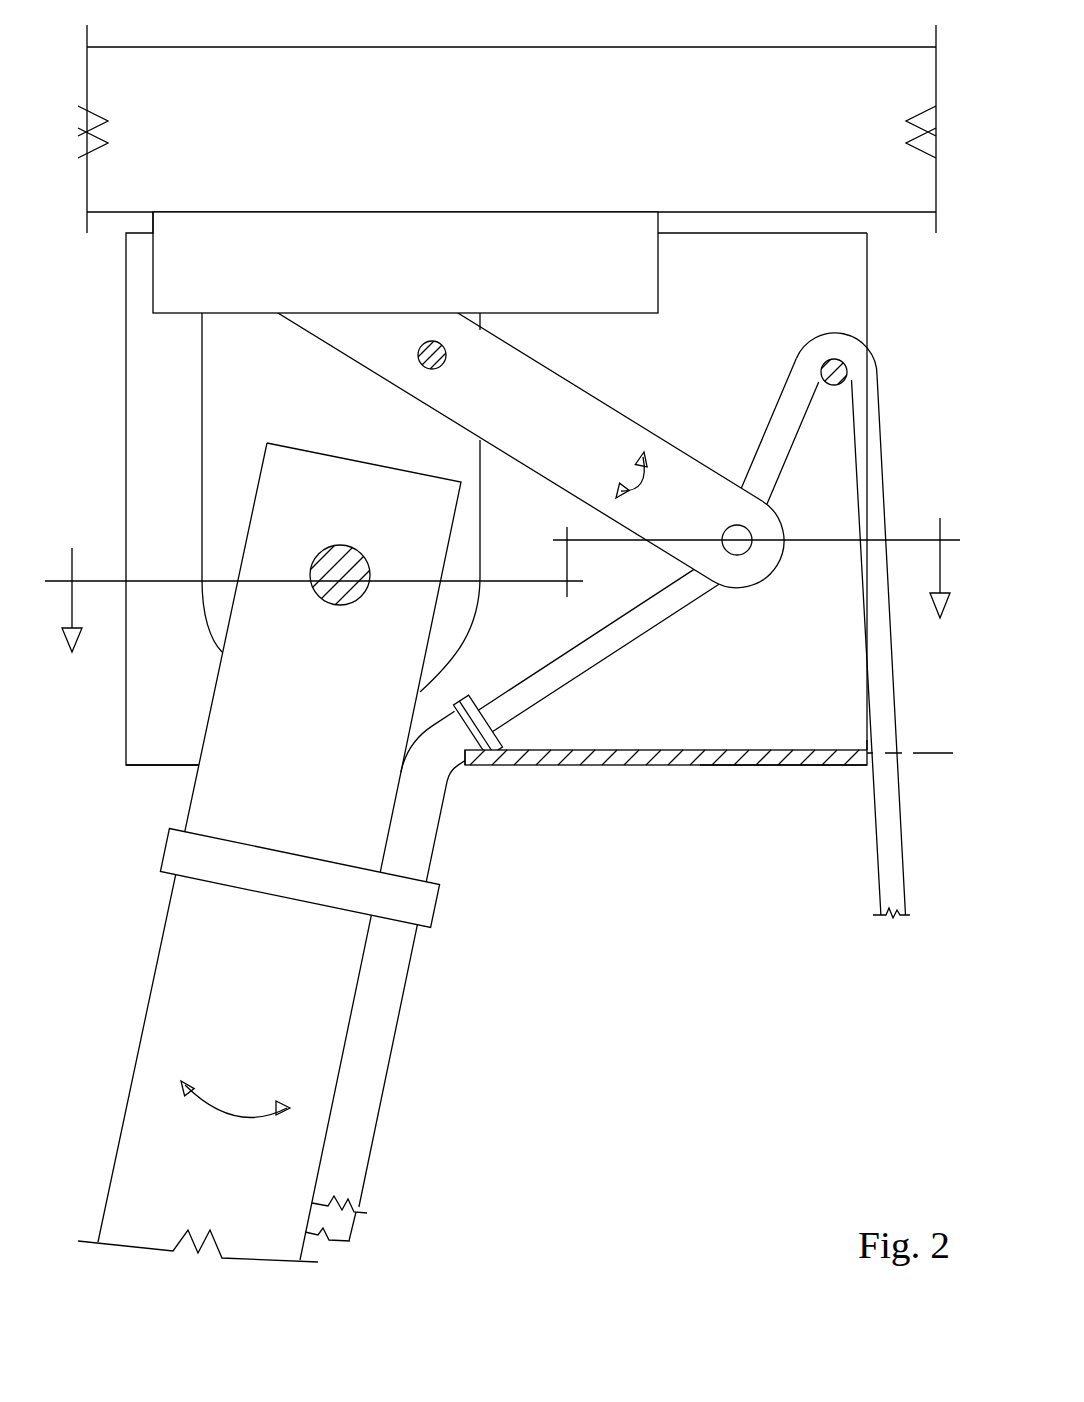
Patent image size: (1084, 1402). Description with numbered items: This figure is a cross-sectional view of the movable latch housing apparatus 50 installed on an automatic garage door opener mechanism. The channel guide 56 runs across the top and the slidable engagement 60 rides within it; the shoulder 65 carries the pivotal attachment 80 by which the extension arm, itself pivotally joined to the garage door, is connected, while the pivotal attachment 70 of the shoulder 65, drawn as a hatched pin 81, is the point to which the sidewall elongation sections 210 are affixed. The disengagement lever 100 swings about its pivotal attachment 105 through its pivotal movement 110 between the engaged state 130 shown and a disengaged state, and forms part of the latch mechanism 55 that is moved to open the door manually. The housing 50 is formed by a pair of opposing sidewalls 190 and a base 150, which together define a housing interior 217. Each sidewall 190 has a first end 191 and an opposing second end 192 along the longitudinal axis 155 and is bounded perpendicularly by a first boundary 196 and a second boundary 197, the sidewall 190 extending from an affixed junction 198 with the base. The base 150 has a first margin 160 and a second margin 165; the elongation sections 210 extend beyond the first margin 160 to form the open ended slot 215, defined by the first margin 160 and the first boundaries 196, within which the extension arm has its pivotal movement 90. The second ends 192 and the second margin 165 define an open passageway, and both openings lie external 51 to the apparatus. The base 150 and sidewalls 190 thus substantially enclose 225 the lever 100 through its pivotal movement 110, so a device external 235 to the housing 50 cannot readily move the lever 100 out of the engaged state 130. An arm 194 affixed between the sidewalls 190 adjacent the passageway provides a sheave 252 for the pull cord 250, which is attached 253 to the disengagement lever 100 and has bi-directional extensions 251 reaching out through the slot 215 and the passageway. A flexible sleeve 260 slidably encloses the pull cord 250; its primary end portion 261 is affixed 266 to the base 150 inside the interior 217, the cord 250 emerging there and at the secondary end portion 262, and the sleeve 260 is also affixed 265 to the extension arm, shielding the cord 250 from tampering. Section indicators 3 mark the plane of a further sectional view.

The section line for FIG. 3 is at (502, 600).
The movable latch housing apparatus 50 is at (881, 302).
The external region 51 is at (932, 504).
The latch mechanism 55 is at (122, 551).
The channel guide 56 is at (750, 112).
The slidable engagement 60 is at (403, 271).
The shoulder 65 is at (278, 377).
The pivotal attachment of the shoulder 70 is at (357, 569).
The pivotal attachment 80 is at (315, 603).
The pin 81 is at (535, 355).
The pivotal movement of the extension arm 90 is at (215, 1107).
The disengagement lever 100 is at (555, 429).
The pivotal attachment of the disengagement lever 105 is at (446, 352).
The pivotal movement of the disengagement lever 110 is at (693, 445).
The engaged state 130 is at (884, 406).
The base 150 is at (666, 818).
The longitudinal axis 155 is at (935, 752).
The first margin 160 is at (475, 767).
The second margin 165 is at (866, 767).
The opposing sidewalls 190 is at (810, 542).
The first end 191 is at (122, 551).
The second end 192 is at (867, 328).
The arm 194 is at (834, 390).
The first boundary 196 is at (778, 825).
The second boundary 197 is at (138, 230).
The affixed junction 198 is at (722, 765).
The elongation section 210 is at (147, 510).
The open ended slot 215 is at (163, 766).
The housing interior 217 is at (820, 712).
The substantial enclosure 225 is at (736, 918).
The external location 235 is at (812, 1104).
The pull cord 250 is at (630, 772).
The bi-directional extensions 251 is at (796, 458).
The sheave 252 is at (835, 360).
The attachment of pull cord 253 is at (726, 526).
The flexible sleeve 260 is at (408, 976).
The primary end portion 261 is at (541, 683).
The secondary end portion 262 is at (352, 1222).
The affixment to extension arm 265 is at (430, 904).
The affixment to base 266 is at (496, 752).